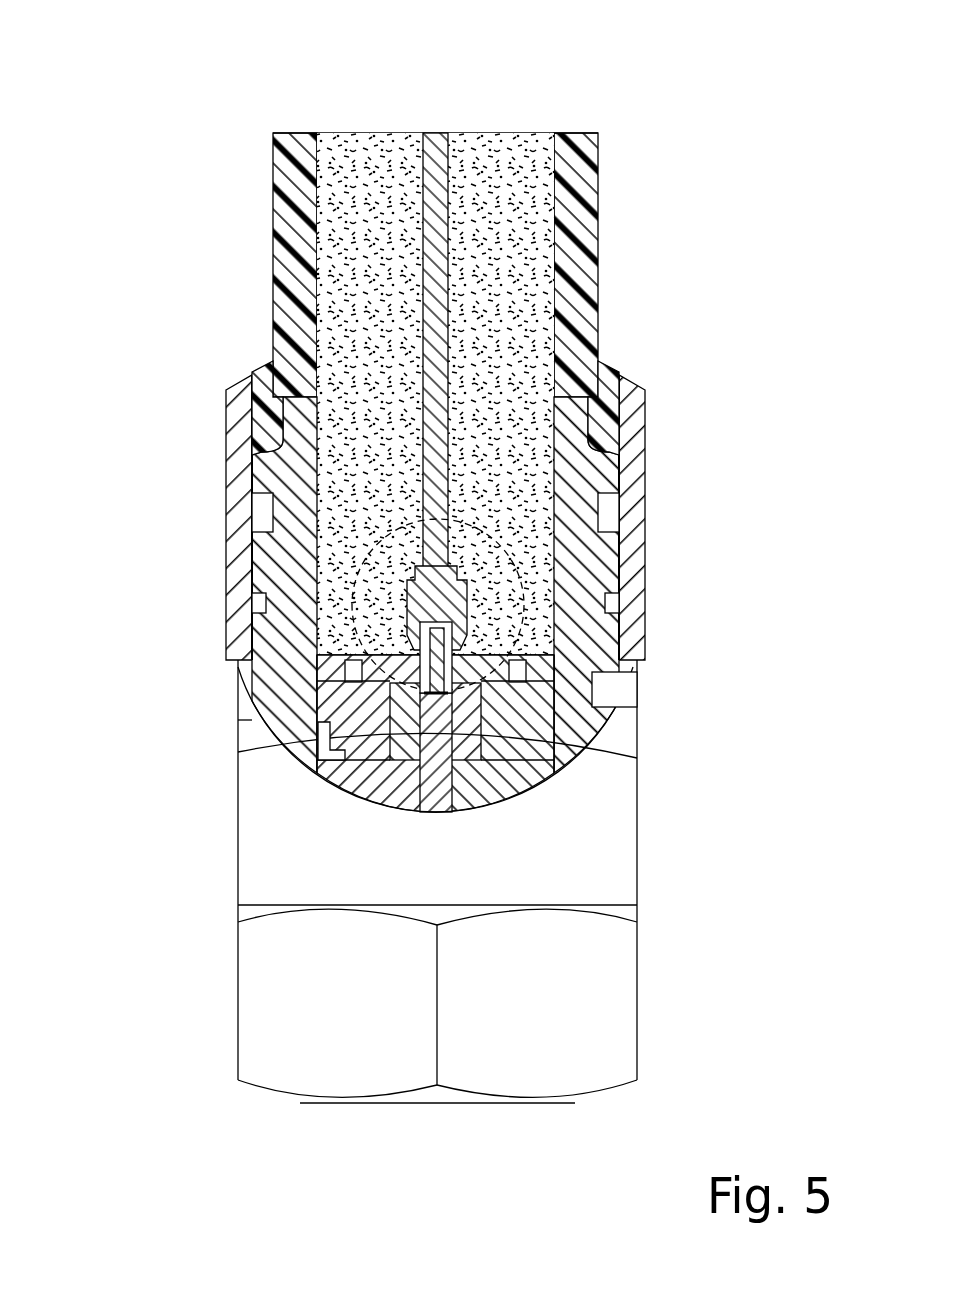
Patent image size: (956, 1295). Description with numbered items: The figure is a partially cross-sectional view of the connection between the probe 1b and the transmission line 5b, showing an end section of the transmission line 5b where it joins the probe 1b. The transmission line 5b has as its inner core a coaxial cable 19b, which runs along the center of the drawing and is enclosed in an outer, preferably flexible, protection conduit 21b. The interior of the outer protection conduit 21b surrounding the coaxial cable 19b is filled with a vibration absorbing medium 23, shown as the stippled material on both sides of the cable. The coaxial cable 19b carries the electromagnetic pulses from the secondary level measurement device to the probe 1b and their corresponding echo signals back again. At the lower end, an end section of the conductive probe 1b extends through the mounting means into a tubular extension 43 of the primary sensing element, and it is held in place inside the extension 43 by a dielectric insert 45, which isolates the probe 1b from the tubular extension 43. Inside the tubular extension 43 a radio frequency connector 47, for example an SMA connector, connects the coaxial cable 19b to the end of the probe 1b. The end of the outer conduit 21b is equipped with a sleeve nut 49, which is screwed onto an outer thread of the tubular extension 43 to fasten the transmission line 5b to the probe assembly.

The transmission line 5b is at (188, 171).
The vibration absorbing medium 23 is at (372, 152).
The coaxial cable 19b is at (440, 173).
The outer protection conduit 21b is at (601, 258).
The sleeve nut 49 is at (270, 410).
The tubular extension 43 is at (240, 553).
The radio frequency connector 47 is at (345, 608).
The dielectric insert 45 is at (556, 696).
The probe 1b is at (465, 742).